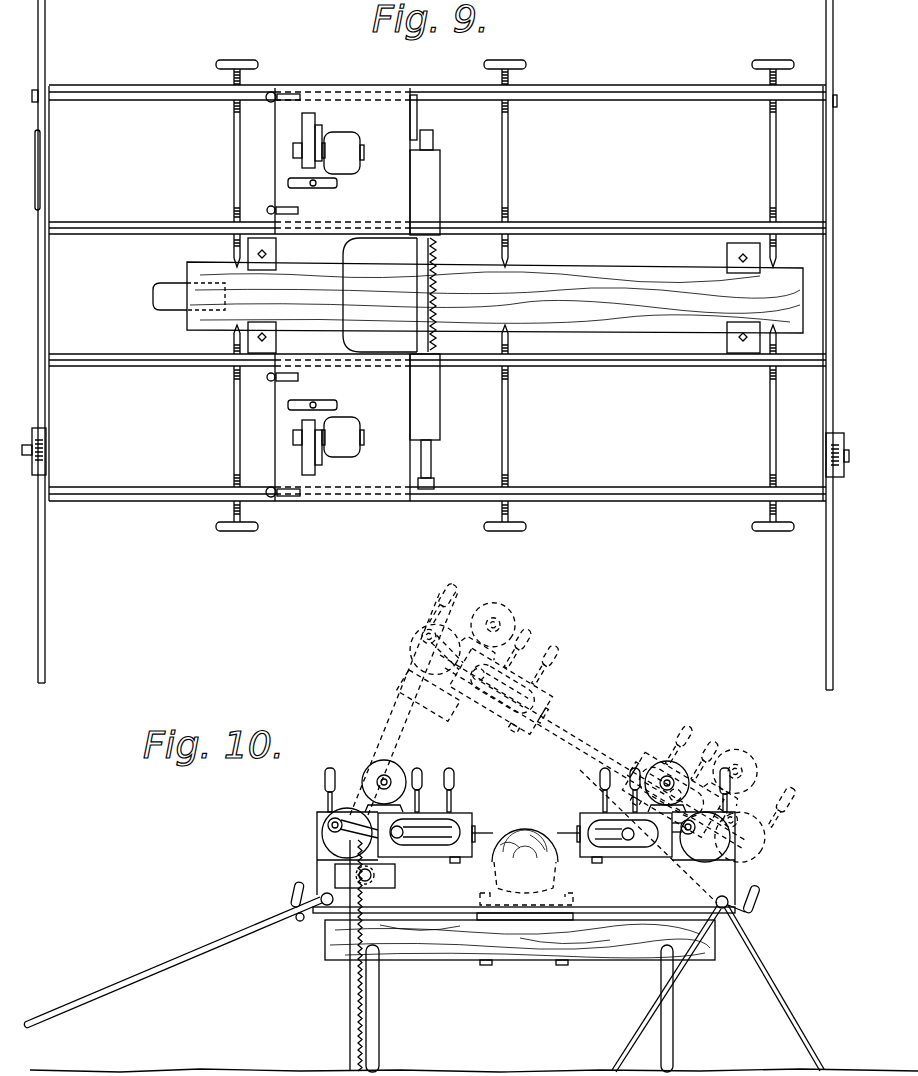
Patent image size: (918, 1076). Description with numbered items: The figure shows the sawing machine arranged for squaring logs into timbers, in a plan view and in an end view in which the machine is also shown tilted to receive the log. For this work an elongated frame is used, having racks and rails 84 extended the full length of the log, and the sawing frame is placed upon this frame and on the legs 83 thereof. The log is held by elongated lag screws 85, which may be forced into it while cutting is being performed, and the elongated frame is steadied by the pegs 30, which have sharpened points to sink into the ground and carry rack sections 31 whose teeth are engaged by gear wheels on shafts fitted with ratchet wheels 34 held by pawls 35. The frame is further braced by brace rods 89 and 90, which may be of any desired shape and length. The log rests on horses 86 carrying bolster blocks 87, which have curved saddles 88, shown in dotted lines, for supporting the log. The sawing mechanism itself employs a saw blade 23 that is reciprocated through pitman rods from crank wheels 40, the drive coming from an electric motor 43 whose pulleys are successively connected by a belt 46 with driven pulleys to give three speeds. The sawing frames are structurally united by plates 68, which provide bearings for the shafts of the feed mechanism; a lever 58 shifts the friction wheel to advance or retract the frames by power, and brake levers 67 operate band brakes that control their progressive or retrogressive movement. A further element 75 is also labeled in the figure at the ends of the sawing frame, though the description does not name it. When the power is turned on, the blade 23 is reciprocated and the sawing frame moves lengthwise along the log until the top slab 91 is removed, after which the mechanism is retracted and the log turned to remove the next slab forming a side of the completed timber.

In FIG. 9, the saw blade 23 is at (437, 243).
In FIG. 10, the saw blade 23 is at (491, 833).
In FIG. 9, the pegs 30 is at (44, 466).
In FIG. 10, the pegs 30 is at (350, 1022).
In FIG. 10, the rack sections 31 is at (370, 913).
In FIG. 10, the ratchet wheels 34 is at (335, 870).
In FIG. 10, the pawls 35 is at (380, 870).
In FIG. 9, the crank wheels 40 is at (417, 112).
In FIG. 10, the crank wheels 40 is at (335, 843).
In FIG. 9, the electric motor 43 is at (347, 160).
In FIG. 10, the electric motor 43 is at (390, 769).
In FIG. 9, the belt 46 is at (306, 138).
In FIG. 9, the lever 58 is at (320, 187).
In FIG. 10, the lever 58 is at (426, 770).
In FIG. 9, the brake levers 67 is at (269, 206).
In FIG. 10, the brake levers 67 is at (453, 781).
In FIG. 9, the plates 68 is at (348, 250).
In FIG. 9, the clamp handle 75 is at (271, 92).
In FIG. 10, the clamp handle 75 is at (325, 778).
In FIG. 9, the legs 83 is at (617, 367).
In FIG. 9, the racks and rails 84 is at (612, 493).
In FIG. 9, the lag screws 85 is at (234, 413).
In FIG. 10, the horses 86 is at (616, 948).
In FIG. 10, the bolster blocks 87 is at (532, 920).
In FIG. 10, the curved saddles 88 is at (553, 898).
In FIG. 10, the brace rod 89 is at (645, 1018).
In FIG. 10, the brace rod 90 is at (170, 968).
In FIG. 9, the top slab 91 is at (310, 298).